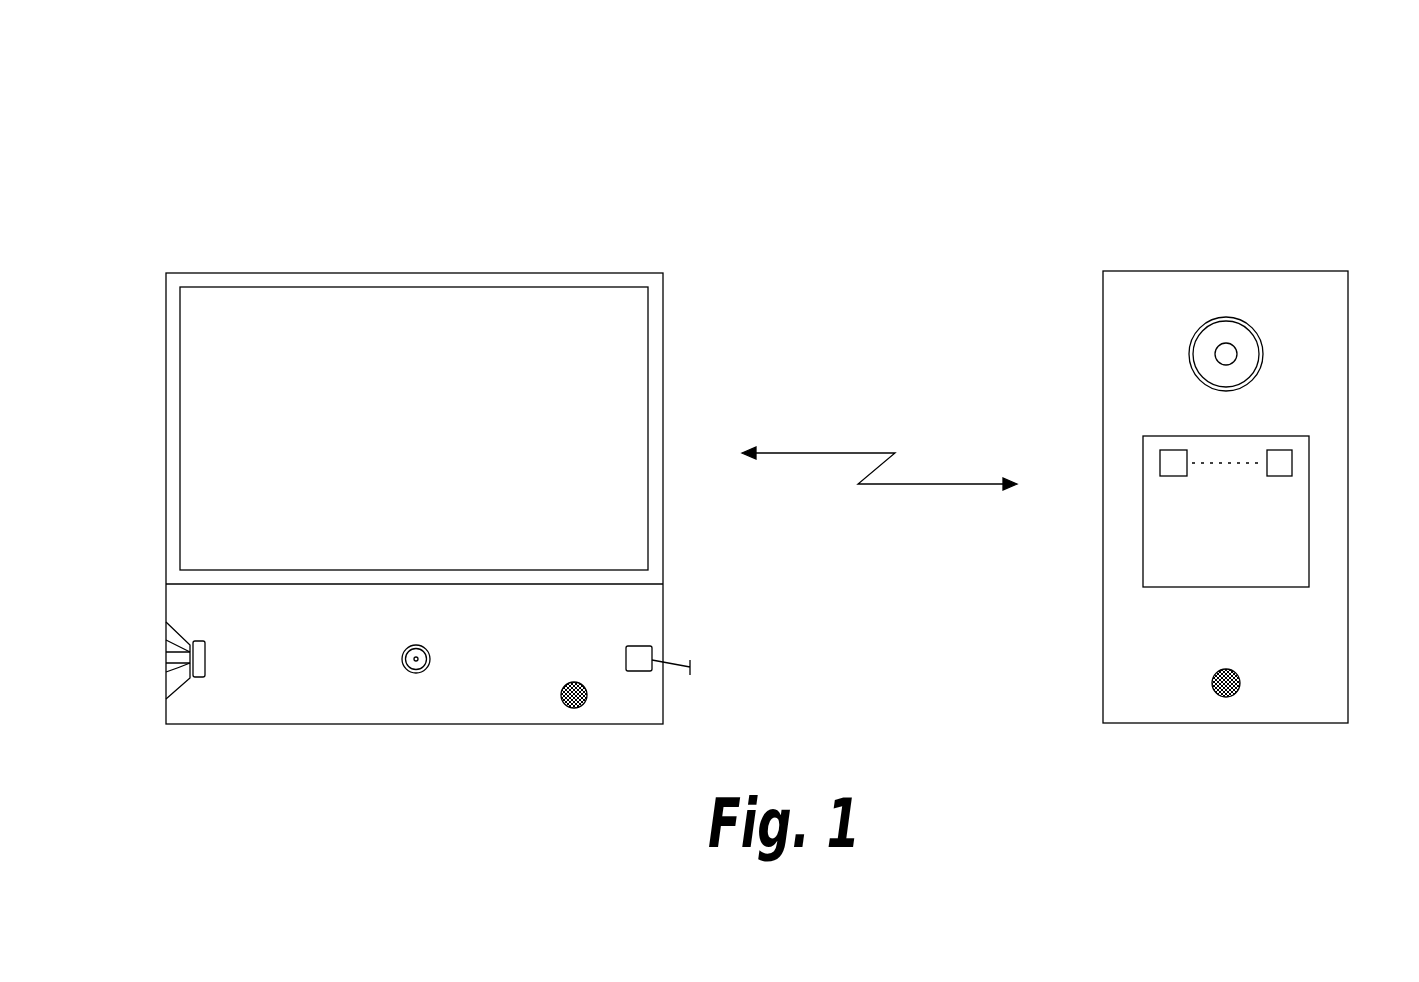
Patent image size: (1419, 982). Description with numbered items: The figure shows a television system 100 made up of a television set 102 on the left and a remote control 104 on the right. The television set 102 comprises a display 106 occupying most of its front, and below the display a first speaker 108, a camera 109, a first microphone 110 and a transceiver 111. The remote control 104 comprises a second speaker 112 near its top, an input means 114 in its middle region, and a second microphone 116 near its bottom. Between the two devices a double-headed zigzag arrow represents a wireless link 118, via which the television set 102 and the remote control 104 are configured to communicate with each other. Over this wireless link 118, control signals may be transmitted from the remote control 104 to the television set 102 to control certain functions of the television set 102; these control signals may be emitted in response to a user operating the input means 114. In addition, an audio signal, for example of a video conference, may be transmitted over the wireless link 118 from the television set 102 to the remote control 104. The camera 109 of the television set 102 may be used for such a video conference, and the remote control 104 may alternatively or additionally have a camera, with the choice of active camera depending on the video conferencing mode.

The television system 100 is at (1036, 206).
The television set 102 is at (208, 250).
The remote control 104 is at (1342, 245).
The display 106 is at (447, 406).
The first speaker 108 is at (206, 648).
The camera 109 is at (402, 667).
The first microphone 110 is at (561, 693).
The transceiver 111 is at (628, 650).
The second speaker 112 is at (1247, 339).
The input means 114 is at (1309, 518).
The second microphone 116 is at (1214, 672).
The wireless link 118 is at (886, 486).